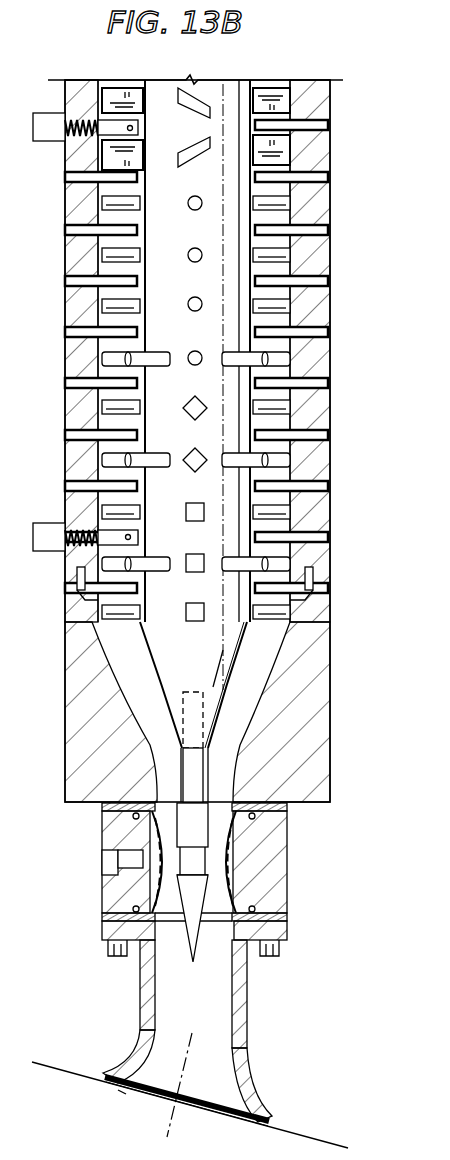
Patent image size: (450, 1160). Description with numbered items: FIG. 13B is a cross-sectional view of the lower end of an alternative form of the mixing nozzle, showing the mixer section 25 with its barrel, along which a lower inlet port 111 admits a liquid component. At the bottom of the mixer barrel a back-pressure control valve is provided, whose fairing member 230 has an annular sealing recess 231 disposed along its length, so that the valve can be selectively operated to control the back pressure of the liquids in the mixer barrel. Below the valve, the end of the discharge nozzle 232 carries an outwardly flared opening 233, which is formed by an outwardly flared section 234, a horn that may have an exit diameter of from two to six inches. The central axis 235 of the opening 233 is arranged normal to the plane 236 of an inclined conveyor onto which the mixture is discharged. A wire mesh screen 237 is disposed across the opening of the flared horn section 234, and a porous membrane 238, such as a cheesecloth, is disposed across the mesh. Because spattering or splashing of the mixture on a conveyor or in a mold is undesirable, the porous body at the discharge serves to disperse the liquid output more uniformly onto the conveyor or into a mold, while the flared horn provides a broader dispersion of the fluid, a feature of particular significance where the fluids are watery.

The mixer section 25 is at (353, 267).
The lower inlet port 111 is at (35, 523).
The annular sealing recess 231 is at (175, 862).
The fairing member 230 is at (193, 932).
The discharge nozzle 232 is at (138, 983).
The outwardly flared section 234 is at (128, 1057).
The porous membrane 238 is at (200, 1093).
The wire mesh screen 237 is at (165, 1097).
The outwardly flared opening 233 is at (116, 1092).
The plane of inclined conveyor 236 is at (310, 1135).
The central axis 235 is at (168, 1138).